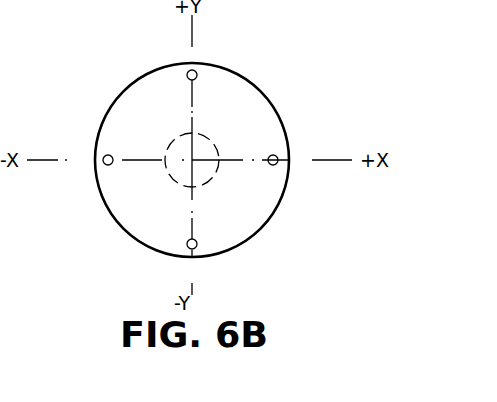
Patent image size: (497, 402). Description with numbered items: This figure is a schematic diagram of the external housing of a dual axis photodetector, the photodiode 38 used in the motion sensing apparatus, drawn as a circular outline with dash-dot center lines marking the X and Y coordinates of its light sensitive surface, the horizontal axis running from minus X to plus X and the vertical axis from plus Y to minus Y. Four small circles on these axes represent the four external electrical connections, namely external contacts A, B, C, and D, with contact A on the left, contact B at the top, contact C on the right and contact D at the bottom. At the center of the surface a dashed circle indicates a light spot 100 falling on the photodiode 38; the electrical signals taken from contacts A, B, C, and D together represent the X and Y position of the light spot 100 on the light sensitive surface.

The photodiode 38 is at (242, 85).
The light spot 100 is at (218, 157).
The external contact A is at (93, 160).
The external contact B is at (191, 61).
The external contact C is at (286, 160).
The external contact D is at (192, 261).